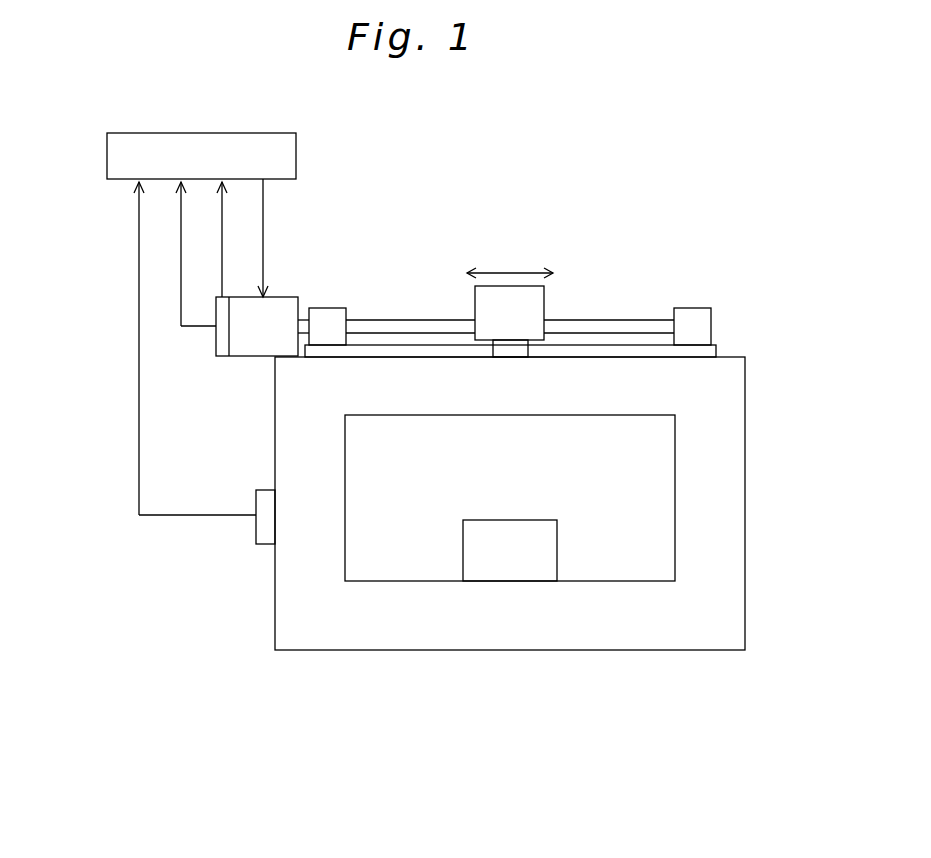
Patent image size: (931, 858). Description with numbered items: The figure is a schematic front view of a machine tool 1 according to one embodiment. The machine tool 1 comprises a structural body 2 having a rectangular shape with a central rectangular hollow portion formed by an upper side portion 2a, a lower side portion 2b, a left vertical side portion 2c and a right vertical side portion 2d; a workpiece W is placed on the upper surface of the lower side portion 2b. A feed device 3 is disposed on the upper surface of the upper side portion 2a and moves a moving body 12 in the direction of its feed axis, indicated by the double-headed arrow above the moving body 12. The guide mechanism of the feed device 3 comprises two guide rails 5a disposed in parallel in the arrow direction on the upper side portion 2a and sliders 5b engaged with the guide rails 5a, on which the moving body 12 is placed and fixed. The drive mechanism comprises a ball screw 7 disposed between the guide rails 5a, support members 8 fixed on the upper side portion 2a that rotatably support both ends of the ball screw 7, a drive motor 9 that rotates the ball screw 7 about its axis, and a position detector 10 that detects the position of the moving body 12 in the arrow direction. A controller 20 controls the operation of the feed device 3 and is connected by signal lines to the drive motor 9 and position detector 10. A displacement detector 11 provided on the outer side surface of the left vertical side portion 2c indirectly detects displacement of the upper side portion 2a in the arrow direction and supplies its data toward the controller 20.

The machine tool 1 is at (639, 168).
The structural body 2 is at (739, 401).
The upper side portion 2a is at (428, 415).
The lower side portion 2b is at (505, 650).
The left vertical side portion 2c is at (345, 542).
The right vertical side portion 2d is at (742, 521).
The feed device 3 is at (443, 240).
The guide rails 5a is at (608, 347).
The sliders 5b is at (515, 358).
The ball screw 7 is at (375, 326).
The support members 8 is at (337, 308).
The drive motor 9 is at (283, 298).
The position detector 10 is at (223, 357).
The displacement detector 11 is at (256, 536).
The moving body 12 is at (544, 298).
The controller 20 is at (107, 146).
The workpiece W is at (533, 522).